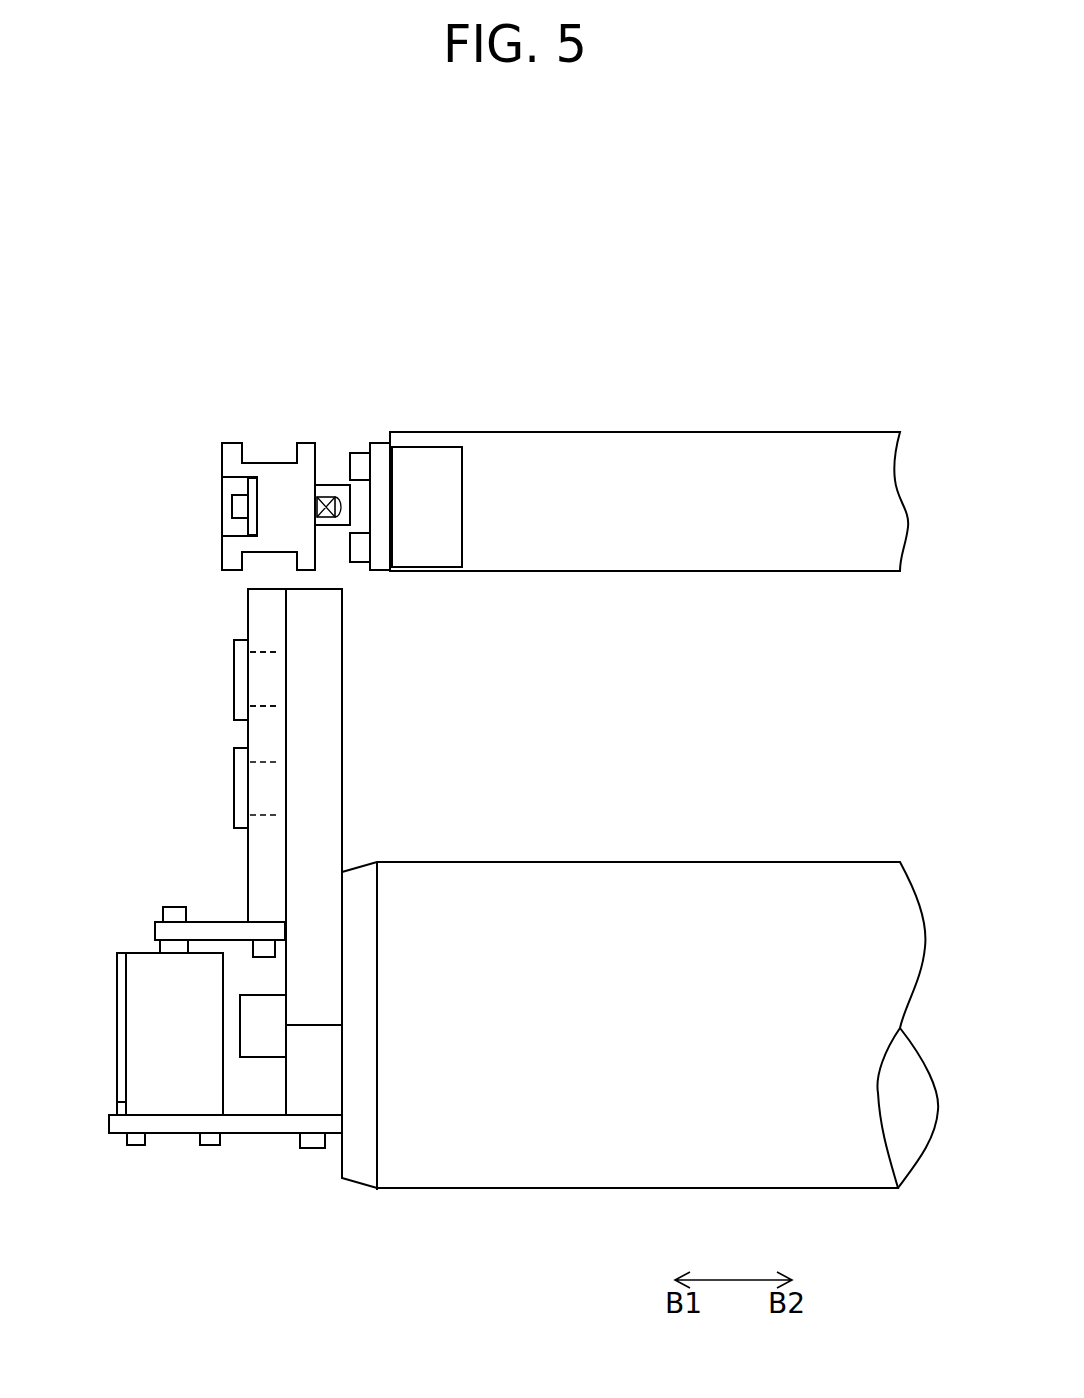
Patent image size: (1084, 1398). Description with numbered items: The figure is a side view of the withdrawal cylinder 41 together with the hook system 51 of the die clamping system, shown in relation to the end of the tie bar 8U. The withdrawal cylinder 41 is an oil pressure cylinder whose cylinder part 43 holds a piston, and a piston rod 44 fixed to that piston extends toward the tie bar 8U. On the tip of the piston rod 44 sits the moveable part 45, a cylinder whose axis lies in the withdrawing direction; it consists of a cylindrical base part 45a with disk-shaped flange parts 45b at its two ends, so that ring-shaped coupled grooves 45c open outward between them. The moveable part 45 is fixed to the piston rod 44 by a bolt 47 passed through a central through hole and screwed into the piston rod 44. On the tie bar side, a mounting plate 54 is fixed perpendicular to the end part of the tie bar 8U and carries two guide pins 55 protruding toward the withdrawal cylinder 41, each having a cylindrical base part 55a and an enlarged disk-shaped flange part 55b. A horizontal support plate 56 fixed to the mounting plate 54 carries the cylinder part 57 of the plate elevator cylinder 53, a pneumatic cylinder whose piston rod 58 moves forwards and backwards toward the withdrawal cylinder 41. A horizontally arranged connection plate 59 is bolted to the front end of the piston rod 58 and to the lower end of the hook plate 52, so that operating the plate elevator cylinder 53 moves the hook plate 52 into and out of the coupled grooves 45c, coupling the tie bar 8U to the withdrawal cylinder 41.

The withdrawal cylinder 41 is at (810, 442).
The cylinder part 43 is at (700, 440).
The piston rod 44 is at (343, 493).
The moveable part 45 is at (227, 458).
The base part 45a is at (267, 468).
The flange parts 45b is at (232, 448).
The coupled grooves 45c is at (285, 458).
The bolt 47 is at (243, 507).
The hook system 51 is at (113, 1122).
The hook plate 52 is at (260, 610).
The plate elevator cylinder 53 is at (143, 1070).
The mounting plate 54 is at (336, 630).
The guide pins 55 is at (238, 688).
The base parts 55a is at (263, 688).
The flange parts 55b is at (233, 708).
The support plate 56 is at (255, 1125).
The cylinder part 57 is at (133, 993).
The piston rod 58 is at (180, 907).
The connection plate 59 is at (217, 930).
The tie bar 8U is at (772, 878).